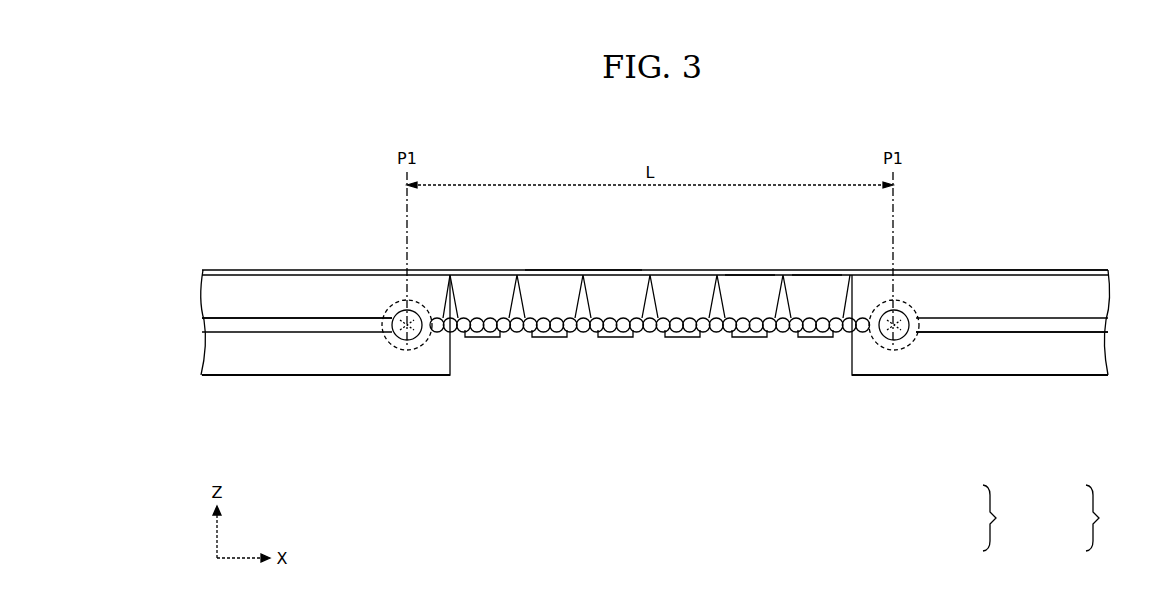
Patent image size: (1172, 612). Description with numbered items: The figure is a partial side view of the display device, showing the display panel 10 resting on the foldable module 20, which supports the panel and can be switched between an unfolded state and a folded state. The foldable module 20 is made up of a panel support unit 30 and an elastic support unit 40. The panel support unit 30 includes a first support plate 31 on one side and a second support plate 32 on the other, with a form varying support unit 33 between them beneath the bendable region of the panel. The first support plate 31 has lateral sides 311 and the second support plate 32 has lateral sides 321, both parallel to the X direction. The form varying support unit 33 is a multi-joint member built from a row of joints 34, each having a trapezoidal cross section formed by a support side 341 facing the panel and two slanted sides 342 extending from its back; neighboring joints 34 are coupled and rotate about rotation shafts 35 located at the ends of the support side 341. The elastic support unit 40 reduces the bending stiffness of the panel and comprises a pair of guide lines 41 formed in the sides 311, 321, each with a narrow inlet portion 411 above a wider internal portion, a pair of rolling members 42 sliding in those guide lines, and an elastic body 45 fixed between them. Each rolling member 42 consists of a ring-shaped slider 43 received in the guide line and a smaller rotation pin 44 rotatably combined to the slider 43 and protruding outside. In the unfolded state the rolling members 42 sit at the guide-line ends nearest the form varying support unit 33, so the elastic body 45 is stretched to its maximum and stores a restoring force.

The display panel 10 is at (962, 270).
The foldable module 20 is at (318, 376).
The panel support unit 30 is at (999, 518).
The first support plate 31 is at (590, 387).
The second support plate 32 is at (981, 398).
The form varying support unit 33 is at (683, 271).
The joint 34 is at (817, 290).
The rotation shaft 35 is at (517, 270).
The elastic support unit 40 is at (1102, 518).
The guide line 41 is at (655, 411).
The rolling member 42 is at (416, 437).
The slider 43 is at (398, 346).
The rotation pin 44 is at (404, 341).
The elastic body 45 is at (512, 334).
The side of first support plate 311 is at (251, 362).
The side of second support plate 321 is at (1054, 362).
The support side 341 is at (553, 270).
The slanted side 342 is at (637, 338).
The inlet portion 411 is at (262, 325).